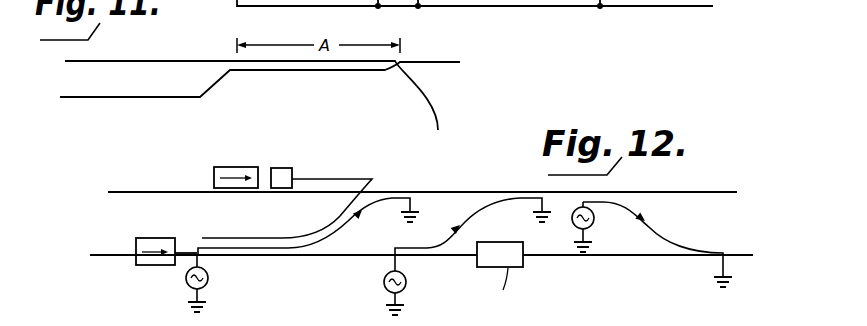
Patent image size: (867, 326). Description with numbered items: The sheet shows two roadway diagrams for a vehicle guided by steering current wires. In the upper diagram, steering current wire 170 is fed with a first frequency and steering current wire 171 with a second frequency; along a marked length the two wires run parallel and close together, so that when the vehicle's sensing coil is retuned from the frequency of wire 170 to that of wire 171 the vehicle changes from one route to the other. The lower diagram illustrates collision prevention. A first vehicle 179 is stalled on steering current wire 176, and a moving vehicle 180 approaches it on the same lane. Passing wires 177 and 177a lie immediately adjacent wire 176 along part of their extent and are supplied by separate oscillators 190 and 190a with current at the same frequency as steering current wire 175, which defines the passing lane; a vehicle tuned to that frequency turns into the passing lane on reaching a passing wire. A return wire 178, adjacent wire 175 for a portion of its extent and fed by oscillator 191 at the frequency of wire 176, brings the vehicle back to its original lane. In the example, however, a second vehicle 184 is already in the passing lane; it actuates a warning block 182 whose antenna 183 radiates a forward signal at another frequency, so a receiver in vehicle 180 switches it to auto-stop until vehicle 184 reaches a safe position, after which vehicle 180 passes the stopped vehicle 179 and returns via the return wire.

In FIG. 11, the steering current wire 170 is at (158, 58).
In FIG. 11, the steering current wire 171 is at (137, 94).
In FIG. 12, the steering current wire 175 is at (170, 189).
In FIG. 12, the steering current wire 176 is at (586, 258).
In FIG. 12, the passing wire 177 is at (352, 222).
In FIG. 12, the passing wire 177a is at (475, 221).
In FIG. 12, the return wire 178 is at (656, 229).
In FIG. 12, the first vehicle 179 is at (477, 263).
In FIG. 12, the moving vehicle 180 is at (137, 265).
In FIG. 12, the warning block 182 is at (284, 167).
In FIG. 12, the antenna 183 is at (340, 179).
In FIG. 12, the second vehicle 184 is at (245, 153).
In FIG. 12, the oscillator 190 is at (210, 279).
In FIG. 12, the oscillator 190a is at (384, 287).
In FIG. 12, the oscillator 191 is at (592, 226).